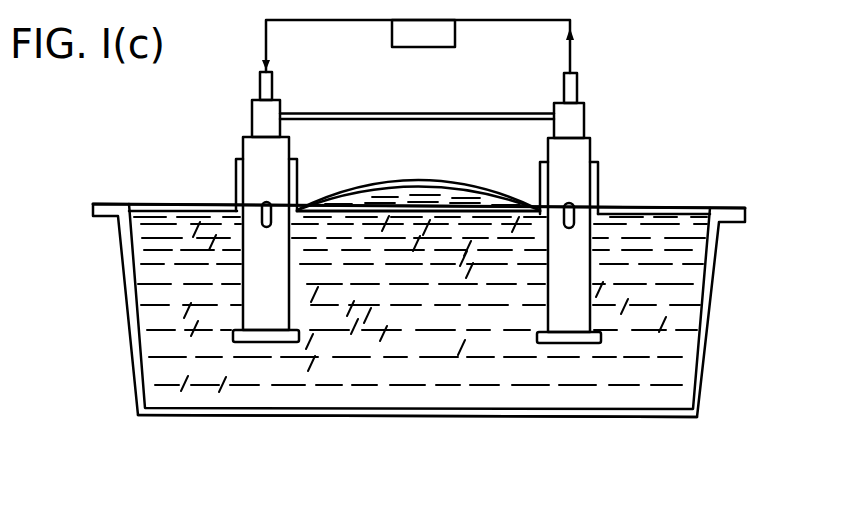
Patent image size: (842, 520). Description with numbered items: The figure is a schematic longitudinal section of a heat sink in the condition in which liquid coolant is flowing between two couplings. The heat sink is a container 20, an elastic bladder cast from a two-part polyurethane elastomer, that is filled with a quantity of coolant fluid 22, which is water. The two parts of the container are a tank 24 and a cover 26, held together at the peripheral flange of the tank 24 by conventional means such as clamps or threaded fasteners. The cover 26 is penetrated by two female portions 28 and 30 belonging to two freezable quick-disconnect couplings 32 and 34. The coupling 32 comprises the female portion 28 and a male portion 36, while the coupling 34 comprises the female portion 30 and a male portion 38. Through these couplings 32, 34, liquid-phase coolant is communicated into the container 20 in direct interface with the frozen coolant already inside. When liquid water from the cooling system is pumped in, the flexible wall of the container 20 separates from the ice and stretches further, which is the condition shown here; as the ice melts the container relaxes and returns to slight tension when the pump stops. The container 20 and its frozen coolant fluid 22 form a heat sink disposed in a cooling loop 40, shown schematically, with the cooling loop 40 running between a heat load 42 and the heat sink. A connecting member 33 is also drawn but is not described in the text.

The container 20 is at (712, 329).
The coolant fluid 22 is at (683, 397).
The tank 24 is at (663, 418).
The cover 26 is at (688, 207).
The female portion 28 is at (537, 178).
The female portion 30 is at (237, 177).
The freezable quick-disconnect coupling 32 is at (610, 148).
The connecting bar 33 is at (392, 120).
The freezable quick-disconnect coupling 34 is at (229, 127).
The male portion 36 is at (584, 121).
The male portion 38 is at (286, 100).
The cooling loop 40 is at (480, 21).
The heat load 42 is at (402, 48).